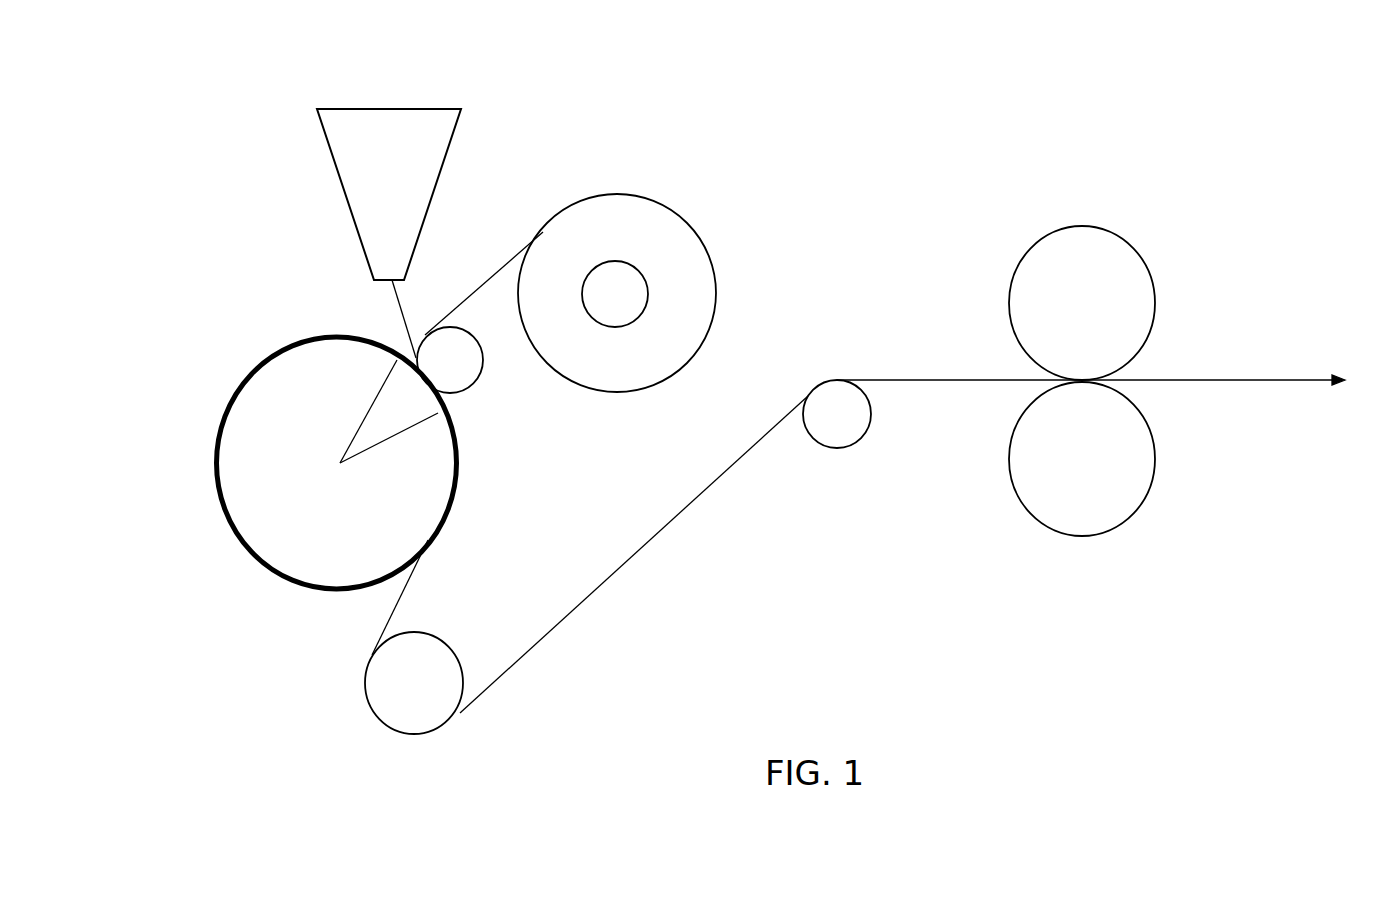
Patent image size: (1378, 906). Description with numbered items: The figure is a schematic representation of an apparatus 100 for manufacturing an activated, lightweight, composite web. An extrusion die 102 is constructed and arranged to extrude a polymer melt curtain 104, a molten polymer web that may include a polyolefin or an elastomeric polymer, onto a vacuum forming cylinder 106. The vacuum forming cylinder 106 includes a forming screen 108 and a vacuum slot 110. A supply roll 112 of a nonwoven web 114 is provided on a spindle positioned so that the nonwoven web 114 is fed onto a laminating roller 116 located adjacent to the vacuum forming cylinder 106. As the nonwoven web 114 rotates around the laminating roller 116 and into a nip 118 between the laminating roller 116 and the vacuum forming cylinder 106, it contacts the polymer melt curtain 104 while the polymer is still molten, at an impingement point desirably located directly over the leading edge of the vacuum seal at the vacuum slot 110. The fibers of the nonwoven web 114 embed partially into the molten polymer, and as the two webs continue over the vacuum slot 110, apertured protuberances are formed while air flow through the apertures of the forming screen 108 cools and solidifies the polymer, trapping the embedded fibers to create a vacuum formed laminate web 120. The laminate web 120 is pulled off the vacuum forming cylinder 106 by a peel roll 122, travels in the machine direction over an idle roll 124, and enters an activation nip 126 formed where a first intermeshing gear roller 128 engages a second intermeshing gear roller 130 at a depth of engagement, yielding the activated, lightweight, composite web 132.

The apparatus 100 is at (824, 141).
The extrusion die 102 is at (351, 142).
The polymer melt curtain 104 is at (403, 320).
The vacuum forming cylinder 106 is at (352, 515).
The forming screen 108 is at (300, 352).
The vacuum slot 110 is at (387, 412).
The supply roll 112 is at (618, 215).
The nonwoven web 114 is at (488, 272).
The laminating roller 116 is at (457, 365).
The nip 118 is at (437, 393).
The vacuum formed laminate web 120 is at (410, 587).
The peel roll 122 is at (397, 698).
The idle roll 124 is at (838, 415).
The activation nip 126 is at (1080, 380).
The first intermeshing gear roller 128 is at (1090, 265).
The second intermeshing gear roller 130 is at (1085, 508).
The activated, lightweight, composite web 132 is at (1243, 377).